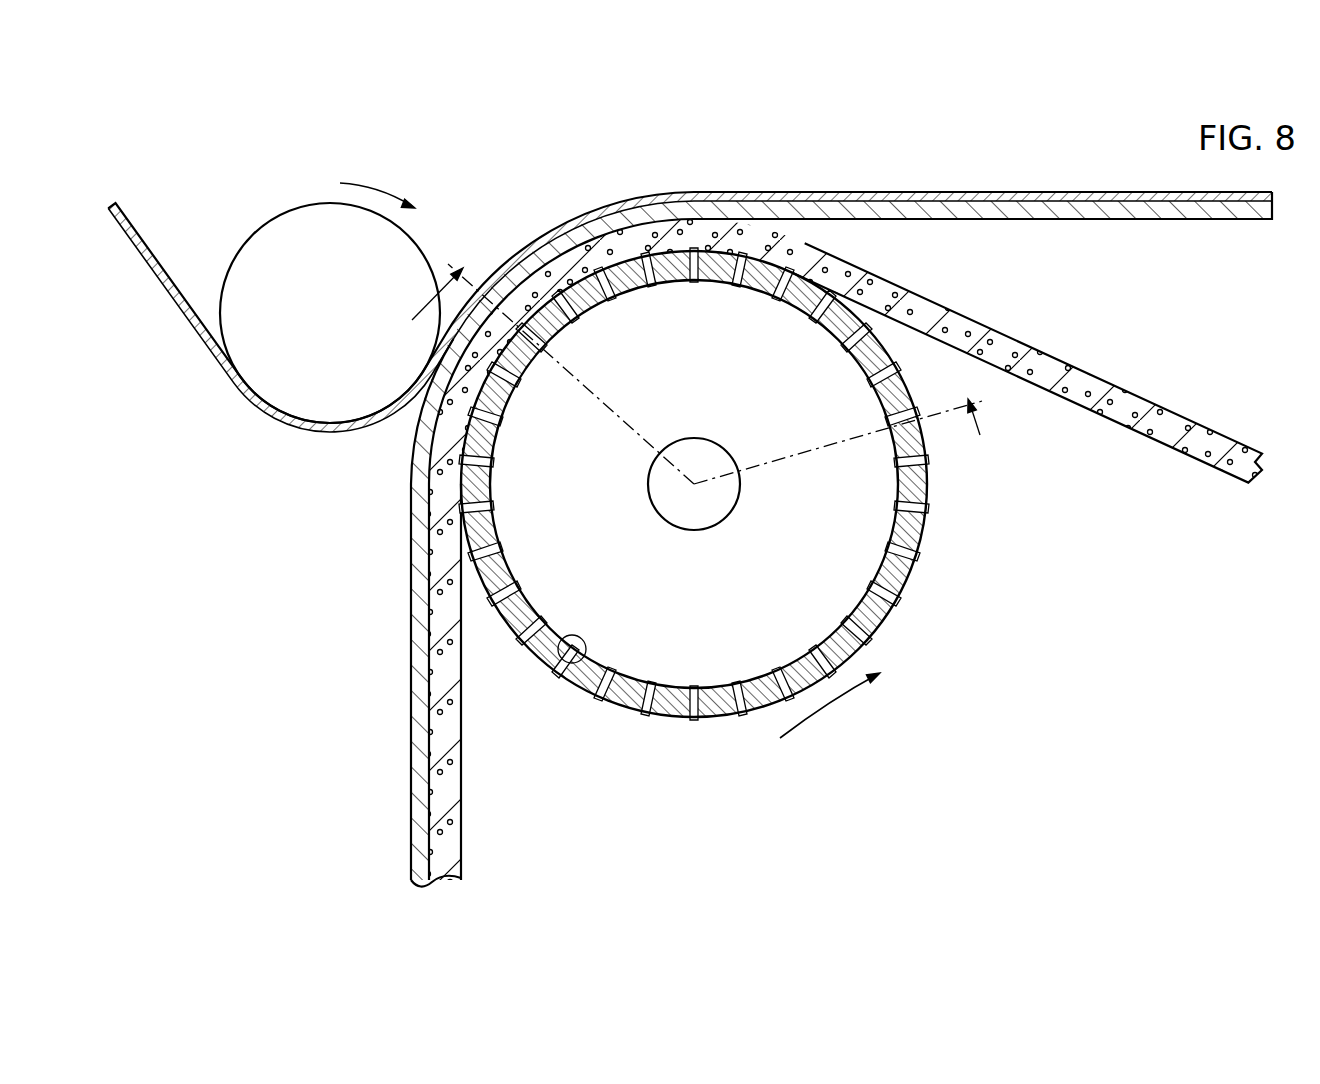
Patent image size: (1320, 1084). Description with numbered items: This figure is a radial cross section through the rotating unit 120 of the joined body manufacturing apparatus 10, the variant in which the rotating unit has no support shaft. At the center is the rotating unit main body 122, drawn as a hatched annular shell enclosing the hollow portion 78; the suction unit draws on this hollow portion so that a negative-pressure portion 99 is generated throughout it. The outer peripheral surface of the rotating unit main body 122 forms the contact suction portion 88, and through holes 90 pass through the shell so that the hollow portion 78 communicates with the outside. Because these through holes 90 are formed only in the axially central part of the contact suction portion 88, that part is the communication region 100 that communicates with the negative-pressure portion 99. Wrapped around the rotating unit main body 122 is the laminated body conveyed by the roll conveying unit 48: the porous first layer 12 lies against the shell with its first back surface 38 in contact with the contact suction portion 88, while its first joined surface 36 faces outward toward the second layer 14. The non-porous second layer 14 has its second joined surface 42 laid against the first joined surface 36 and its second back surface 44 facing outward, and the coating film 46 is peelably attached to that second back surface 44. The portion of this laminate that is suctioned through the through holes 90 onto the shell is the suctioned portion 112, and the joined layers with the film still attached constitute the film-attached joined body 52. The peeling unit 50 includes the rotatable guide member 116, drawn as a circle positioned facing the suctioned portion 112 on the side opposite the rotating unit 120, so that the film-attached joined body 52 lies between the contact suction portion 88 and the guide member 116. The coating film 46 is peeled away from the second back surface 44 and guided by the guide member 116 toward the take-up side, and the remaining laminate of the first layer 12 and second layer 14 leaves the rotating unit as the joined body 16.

The joined body manufacturing apparatus 10 is at (186, 138).
The first layer 12 is at (855, 357).
The second layer 14 is at (690, 307).
The joined body 16 is at (405, 732).
The first joined surface 36 is at (1157, 402).
The first back surface 38 is at (1142, 440).
The second joined surface 42 is at (1062, 212).
The second back surface 44 is at (690, 281).
The coating film 46 is at (157, 262).
The roll conveying unit 48 is at (733, 469).
The peeling unit 50 is at (327, 274).
The film-attached joined body 52 is at (493, 245).
The hollow portion 78 is at (548, 658).
The contact suction portion 88 is at (625, 265).
The through holes 90 is at (736, 469).
The negative-pressure portion 99 is at (731, 469).
The communication region 100 is at (582, 277).
The suctioned portion 112 is at (571, 205).
The guide member 116 is at (268, 250).
The rotating unit 120 is at (618, 718).
The rotating unit main body 122 is at (930, 533).